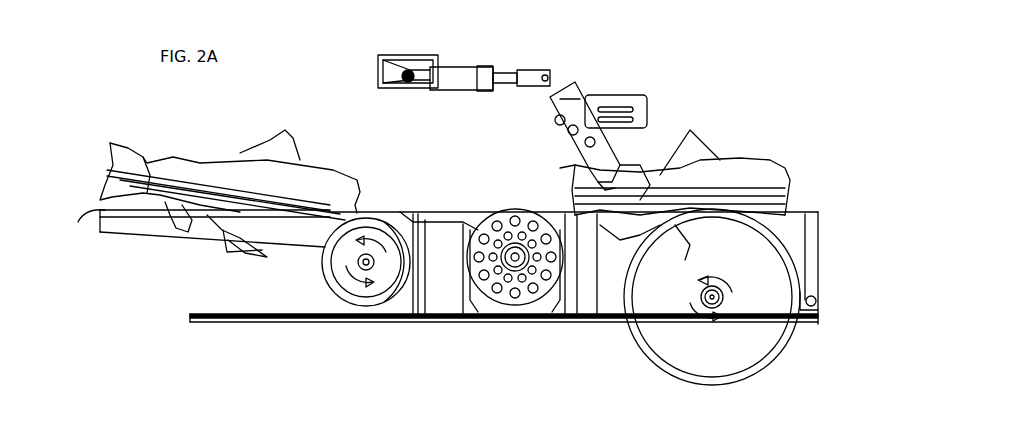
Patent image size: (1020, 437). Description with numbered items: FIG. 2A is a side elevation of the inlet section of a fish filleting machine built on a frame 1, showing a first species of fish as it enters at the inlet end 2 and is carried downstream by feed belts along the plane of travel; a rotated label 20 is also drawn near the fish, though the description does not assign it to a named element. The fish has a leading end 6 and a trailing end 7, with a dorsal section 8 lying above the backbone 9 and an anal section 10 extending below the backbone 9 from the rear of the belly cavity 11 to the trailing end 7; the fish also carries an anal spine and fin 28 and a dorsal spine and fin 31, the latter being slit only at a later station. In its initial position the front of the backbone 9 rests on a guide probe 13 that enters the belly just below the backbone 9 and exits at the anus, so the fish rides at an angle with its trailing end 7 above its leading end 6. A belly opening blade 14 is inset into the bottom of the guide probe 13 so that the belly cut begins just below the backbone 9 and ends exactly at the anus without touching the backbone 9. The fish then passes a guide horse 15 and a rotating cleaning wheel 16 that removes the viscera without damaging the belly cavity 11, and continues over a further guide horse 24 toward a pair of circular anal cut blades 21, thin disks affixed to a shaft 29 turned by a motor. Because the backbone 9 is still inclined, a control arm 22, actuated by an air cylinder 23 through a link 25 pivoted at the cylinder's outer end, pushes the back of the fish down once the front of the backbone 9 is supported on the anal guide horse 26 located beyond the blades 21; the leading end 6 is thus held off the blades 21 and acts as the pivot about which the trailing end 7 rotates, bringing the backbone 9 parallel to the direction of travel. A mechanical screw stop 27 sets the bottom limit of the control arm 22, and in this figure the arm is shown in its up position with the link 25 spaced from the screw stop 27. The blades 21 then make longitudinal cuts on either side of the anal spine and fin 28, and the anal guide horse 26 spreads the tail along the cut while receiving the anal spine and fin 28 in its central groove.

The frame 1 is at (491, 326).
The inlet end 2 is at (118, 287).
The leading end 6 is at (377, 172).
The trailing end 7 is at (126, 147).
The dorsal section 8 is at (289, 176).
The backbone 9 is at (205, 180).
The anal section 10 is at (209, 200).
The belly cavity 11 is at (278, 200).
The guide probe 13 is at (99, 207).
The belly opening blade 14 is at (386, 298).
The guide horse 15 is at (437, 210).
The cleaning wheel 16 is at (521, 297).
The fish 20 is at (315, 280).
The anal cut blades 21 is at (692, 352).
The control arm 22 is at (580, 160).
The air cylinder 23 is at (438, 84).
The guide horse 24 is at (598, 296).
The link 25 is at (548, 96).
The anal guide horse 26 is at (840, 204).
The mechanical screw stop 27 is at (606, 70).
The anal spine and fin 28 is at (182, 222).
The shaft 29 is at (784, 324).
The dorsal spine and fin 31 is at (284, 135).